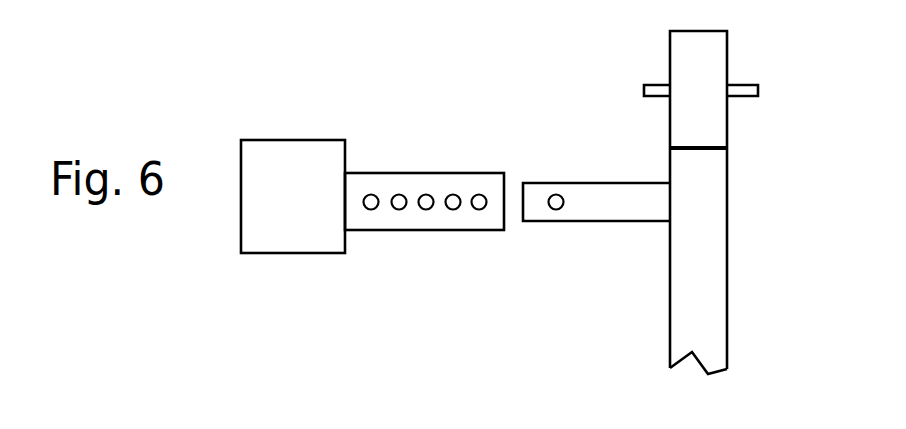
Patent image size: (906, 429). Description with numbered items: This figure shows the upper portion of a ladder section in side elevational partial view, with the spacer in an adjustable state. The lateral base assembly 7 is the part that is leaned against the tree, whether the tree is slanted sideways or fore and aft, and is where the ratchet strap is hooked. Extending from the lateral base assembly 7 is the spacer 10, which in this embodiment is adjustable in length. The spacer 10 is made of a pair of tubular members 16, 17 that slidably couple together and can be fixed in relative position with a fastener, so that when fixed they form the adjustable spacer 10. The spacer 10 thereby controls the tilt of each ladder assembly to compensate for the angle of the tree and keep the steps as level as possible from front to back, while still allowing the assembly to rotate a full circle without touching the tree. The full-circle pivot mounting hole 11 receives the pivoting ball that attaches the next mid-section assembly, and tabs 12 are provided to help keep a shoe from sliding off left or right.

The lateral base assembly 7 is at (337, 159).
The spacer 10 is at (385, 194).
The 360 degree pivot mounting hole 11 is at (653, 90).
The tabs 12 is at (718, 69).
The tubular member 16 is at (408, 185).
The tubular member 17 is at (653, 197).